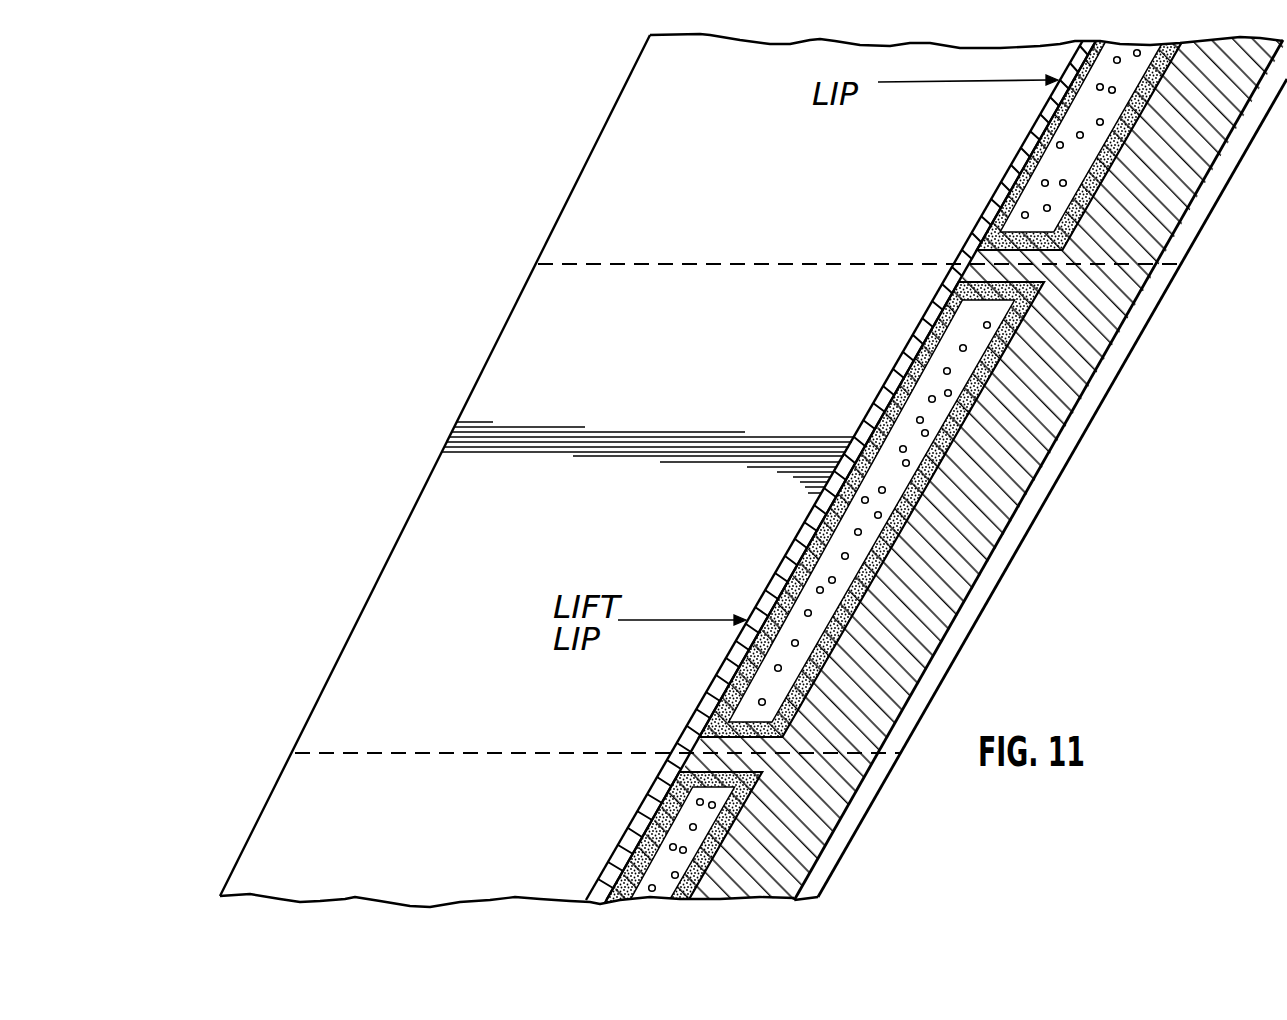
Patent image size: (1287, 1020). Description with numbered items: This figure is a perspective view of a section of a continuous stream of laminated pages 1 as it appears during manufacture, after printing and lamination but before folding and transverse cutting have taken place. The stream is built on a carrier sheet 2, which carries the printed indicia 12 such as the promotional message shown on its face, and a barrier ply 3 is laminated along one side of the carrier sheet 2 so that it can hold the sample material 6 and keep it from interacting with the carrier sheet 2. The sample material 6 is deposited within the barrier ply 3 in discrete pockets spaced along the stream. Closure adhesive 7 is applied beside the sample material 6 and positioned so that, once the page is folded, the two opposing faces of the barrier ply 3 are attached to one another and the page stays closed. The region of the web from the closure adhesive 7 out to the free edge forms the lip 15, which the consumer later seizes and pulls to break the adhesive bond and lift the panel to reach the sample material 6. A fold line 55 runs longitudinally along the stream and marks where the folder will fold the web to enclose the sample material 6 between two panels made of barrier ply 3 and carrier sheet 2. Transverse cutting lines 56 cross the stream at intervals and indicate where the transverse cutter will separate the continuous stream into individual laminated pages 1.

The laminated page 1 is at (590, 126).
The carrier sheet 2 is at (495, 410).
The barrier ply 3 is at (1100, 353).
The sample material 6 is at (1050, 157).
The closure adhesive 7 is at (1017, 197).
The printed indicia 12 is at (612, 328).
The lip 15 is at (1000, 557).
The fold line 55 is at (932, 482).
The transverse cutting lines 56 is at (1108, 258).